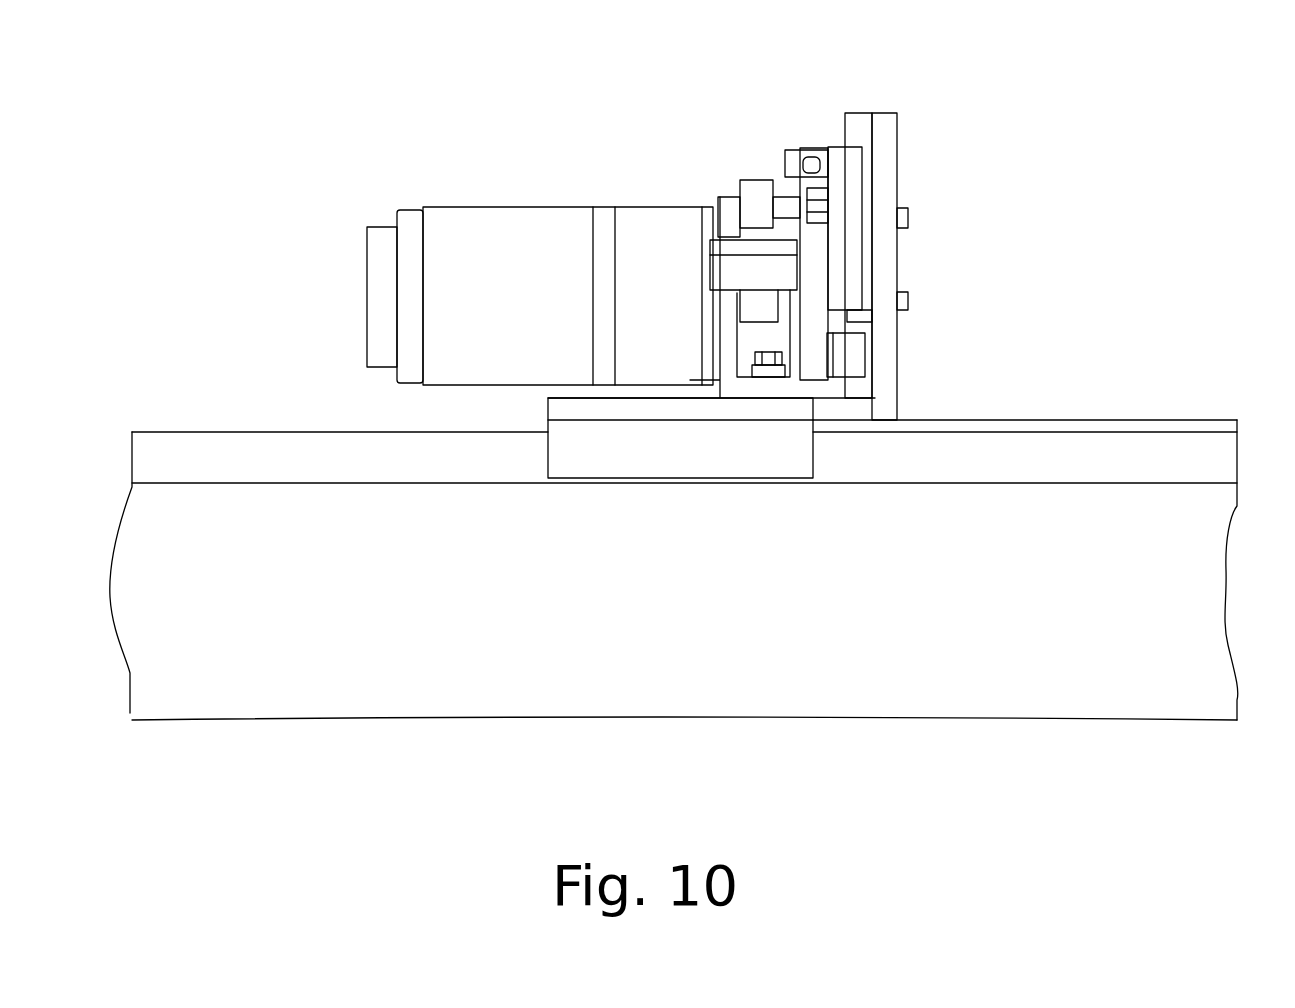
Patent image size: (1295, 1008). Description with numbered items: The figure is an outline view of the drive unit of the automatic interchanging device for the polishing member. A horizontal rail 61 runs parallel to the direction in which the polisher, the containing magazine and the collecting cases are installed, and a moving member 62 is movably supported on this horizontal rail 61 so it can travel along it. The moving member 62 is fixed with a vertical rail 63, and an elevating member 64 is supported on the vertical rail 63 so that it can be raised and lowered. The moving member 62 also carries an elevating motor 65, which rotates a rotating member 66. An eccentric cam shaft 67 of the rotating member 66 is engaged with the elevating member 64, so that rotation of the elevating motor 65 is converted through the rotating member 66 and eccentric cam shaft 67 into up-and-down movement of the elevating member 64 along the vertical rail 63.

The horizontal rail 61 is at (1181, 457).
The moving member 62 is at (710, 453).
The vertical rail 63 is at (863, 122).
The elevating member 64 is at (837, 157).
The elevating motor 65 is at (452, 232).
The rotating member 66 is at (737, 197).
The eccentric cam shaft 67 is at (783, 203).